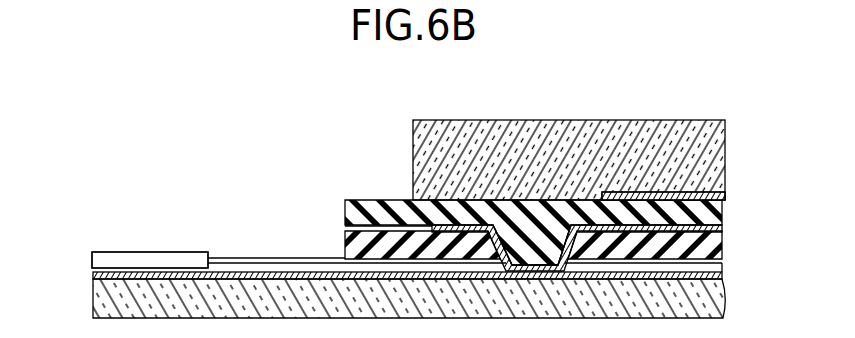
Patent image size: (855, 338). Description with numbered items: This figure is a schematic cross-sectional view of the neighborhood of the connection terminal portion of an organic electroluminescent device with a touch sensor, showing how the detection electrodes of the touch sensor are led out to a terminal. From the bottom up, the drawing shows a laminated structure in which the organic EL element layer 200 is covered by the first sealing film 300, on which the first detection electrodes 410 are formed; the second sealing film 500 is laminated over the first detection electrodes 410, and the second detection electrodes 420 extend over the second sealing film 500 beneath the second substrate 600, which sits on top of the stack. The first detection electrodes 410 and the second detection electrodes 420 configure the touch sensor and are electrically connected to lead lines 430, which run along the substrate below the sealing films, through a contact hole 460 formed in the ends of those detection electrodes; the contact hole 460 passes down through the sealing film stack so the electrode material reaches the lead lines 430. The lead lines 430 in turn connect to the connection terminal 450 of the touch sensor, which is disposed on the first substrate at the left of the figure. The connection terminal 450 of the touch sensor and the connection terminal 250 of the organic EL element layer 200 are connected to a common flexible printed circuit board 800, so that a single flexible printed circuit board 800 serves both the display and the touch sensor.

The organic EL element layer 200 is at (728, 265).
The lead lines 430 is at (95, 277).
The flexible printed circuit board 800 is at (100, 264).
The connection terminal 450 is at (208, 240).
The connection terminal 250 is at (208, 240).
The first sealing film 300 is at (717, 246).
The second sealing film 500 is at (717, 213).
The first detection electrodes 410 is at (717, 229).
The contact hole 460 is at (526, 262).
The second substrate 600 is at (715, 152).
The second detection electrodes 420 is at (717, 196).